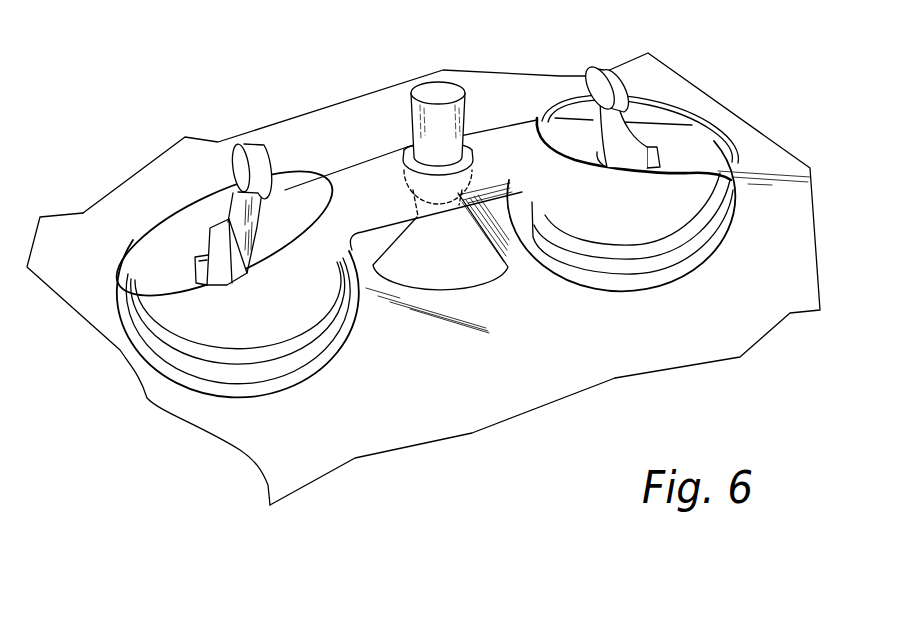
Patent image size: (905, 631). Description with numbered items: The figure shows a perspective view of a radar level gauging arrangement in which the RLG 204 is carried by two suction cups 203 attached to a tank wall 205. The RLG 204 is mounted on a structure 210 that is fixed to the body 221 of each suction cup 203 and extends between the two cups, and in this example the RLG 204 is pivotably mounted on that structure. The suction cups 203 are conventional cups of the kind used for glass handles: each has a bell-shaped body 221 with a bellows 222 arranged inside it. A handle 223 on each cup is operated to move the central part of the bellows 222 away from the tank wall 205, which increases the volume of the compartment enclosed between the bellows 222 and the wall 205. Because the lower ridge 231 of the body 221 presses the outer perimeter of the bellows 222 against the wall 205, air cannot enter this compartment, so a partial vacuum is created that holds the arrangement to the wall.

The suction cup 203 is at (446, 233).
The RLG 204 is at (423, 297).
The tank wall 205 is at (313, 458).
The structure 210 is at (376, 183).
The body 221 is at (567, 235).
The bellows 222 is at (157, 375).
The handle 223 is at (256, 158).
The lower ridge 231 is at (572, 273).